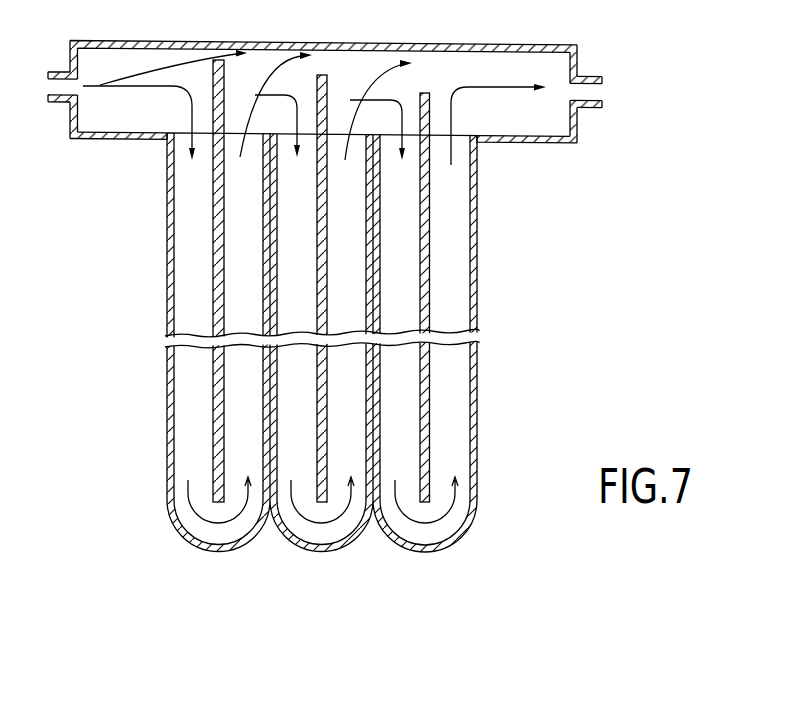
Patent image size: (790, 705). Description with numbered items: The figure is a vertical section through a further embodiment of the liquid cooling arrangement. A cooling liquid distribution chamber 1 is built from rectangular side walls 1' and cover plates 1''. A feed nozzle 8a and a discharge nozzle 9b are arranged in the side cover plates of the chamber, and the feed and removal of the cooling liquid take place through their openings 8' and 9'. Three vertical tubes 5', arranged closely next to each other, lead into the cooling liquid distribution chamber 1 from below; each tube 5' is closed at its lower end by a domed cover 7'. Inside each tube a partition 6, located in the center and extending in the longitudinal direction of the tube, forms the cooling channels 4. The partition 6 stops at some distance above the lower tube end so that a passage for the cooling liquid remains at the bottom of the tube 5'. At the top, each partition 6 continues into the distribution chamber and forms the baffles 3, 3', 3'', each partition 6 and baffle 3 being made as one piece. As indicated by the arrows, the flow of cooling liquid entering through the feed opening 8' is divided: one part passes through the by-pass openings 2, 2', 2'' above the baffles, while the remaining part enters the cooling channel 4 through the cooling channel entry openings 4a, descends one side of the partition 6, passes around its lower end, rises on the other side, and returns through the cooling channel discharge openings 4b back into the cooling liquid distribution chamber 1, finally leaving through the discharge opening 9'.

The cooling liquid distribution chamber 1 is at (351, 97).
The side wall 1' is at (323, 162).
The cover plate 1'' is at (594, 79).
The by-pass opening 2 is at (209, 251).
The by-pass opening 2' is at (314, 251).
The by-pass opening 2'' is at (435, 251).
The baffle 3 is at (180, 46).
The baffle 3' is at (309, 79).
The baffle 3'' is at (445, 83).
The cooling channel 4 is at (325, 342).
The cooling channel entry opening 4a is at (172, 145).
The cooling channel discharge opening 4b is at (238, 133).
The vertical tube 5' is at (325, 316).
The partition 6 is at (323, 251).
The domed cover 7' is at (355, 526).
The feed opening 8' is at (50, 51).
The feed nozzle 8a is at (62, 70).
The discharge opening 9' is at (620, 73).
The discharge nozzle 9b is at (603, 105).